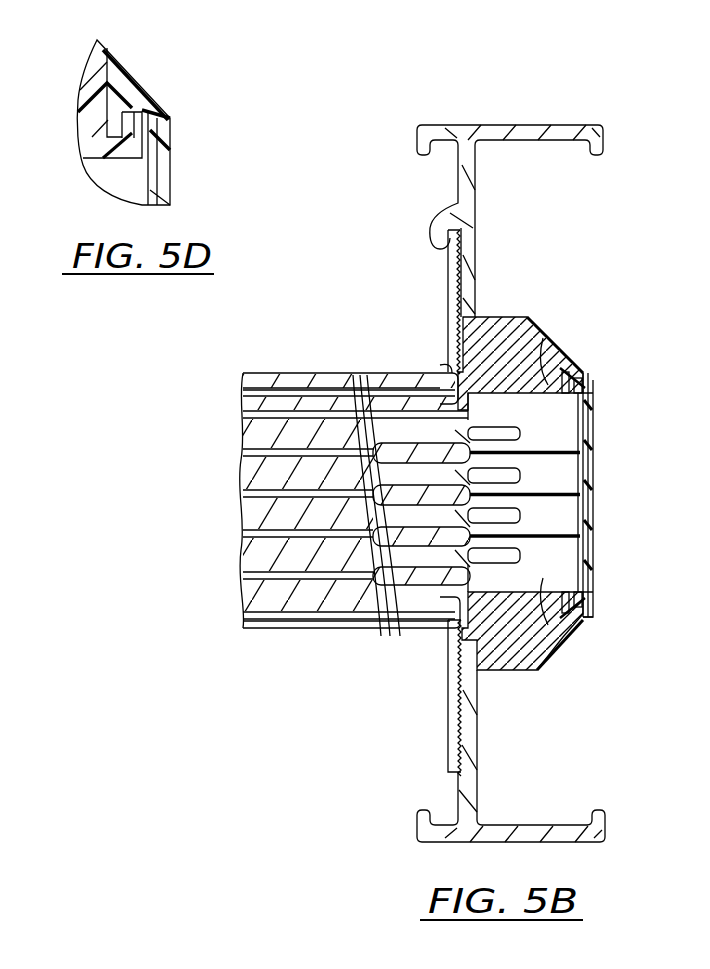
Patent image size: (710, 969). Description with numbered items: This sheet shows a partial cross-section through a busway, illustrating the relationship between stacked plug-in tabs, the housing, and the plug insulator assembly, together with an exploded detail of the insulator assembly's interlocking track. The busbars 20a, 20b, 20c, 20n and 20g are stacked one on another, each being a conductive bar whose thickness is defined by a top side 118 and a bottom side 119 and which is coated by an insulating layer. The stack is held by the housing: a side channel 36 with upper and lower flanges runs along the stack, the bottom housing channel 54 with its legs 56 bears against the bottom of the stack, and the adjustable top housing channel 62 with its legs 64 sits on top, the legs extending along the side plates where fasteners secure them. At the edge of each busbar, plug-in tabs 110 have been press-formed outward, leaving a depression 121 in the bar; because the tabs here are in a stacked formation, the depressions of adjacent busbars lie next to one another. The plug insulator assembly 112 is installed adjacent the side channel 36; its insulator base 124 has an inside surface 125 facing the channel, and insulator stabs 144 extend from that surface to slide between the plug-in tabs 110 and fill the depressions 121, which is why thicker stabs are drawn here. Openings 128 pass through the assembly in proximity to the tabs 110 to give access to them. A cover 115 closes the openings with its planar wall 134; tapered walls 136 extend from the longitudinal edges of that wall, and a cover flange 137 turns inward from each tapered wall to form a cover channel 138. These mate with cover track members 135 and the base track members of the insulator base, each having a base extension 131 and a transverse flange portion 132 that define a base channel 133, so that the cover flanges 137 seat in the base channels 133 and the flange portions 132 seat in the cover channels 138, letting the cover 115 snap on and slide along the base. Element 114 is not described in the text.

In FIG. 5B, the side channel 36 is at (553, 125).
In FIG. 5B, the bottom housing channel 54 is at (250, 628).
In FIG. 5B, the legs 56 is at (447, 754).
In FIG. 5B, the adjustable top housing channel 62 is at (292, 373).
In FIG. 5B, the legs 64 is at (447, 265).
In FIG. 5B, the plug-in tabs 110 is at (520, 433).
In FIG. 5B, the plug insulator assembly 112 is at (530, 318).
In FIG. 5B, the strain relief 114 is at (448, 373).
In FIG. 5B, the cover 115 is at (598, 430).
In FIG. 5B, the top side 118 is at (248, 392).
In FIG. 5B, the bottom side 119 is at (247, 420).
In FIG. 5B, the depression 121 is at (285, 630).
In FIG. 5B, the insulator base 124 is at (488, 317).
In FIG. 5B, the inside surface 125 is at (452, 655).
In FIG. 5B, the openings 128 is at (575, 472).
In FIG. 5D, the base extension 131 is at (165, 110).
In FIG. 5B, the base extension 131 is at (598, 392).
In FIG. 5D, the flange portion 132 is at (150, 92).
In FIG. 5B, the flange portion 132 is at (576, 362).
In FIG. 5D, the base channel 133 is at (103, 136).
In FIG. 5D, the planar wall 134 is at (170, 165).
In FIG. 5B, the planar wall 134 is at (594, 492).
In FIG. 5D, the cover track members 135 is at (122, 68).
In FIG. 5B, the cover track members 135 is at (570, 350).
In FIG. 5D, the tapered walls 136 is at (180, 112).
In FIG. 5B, the tapered walls 136 is at (602, 612).
In FIG. 5D, the cover flange 137 is at (122, 118).
In FIG. 5B, the cover flange 137 is at (548, 348).
In FIG. 5D, the cover channel 138 is at (148, 128).
In FIG. 5B, the cover channel 138 is at (598, 385).
In FIG. 5B, the insulator stabs 144 is at (355, 375).
In FIG. 5B, the busbar 20g is at (250, 397).
In FIG. 5B, the busbar 20a is at (248, 448).
In FIG. 5B, the busbar 20b is at (248, 484).
In FIG. 5B, the busbar 20c is at (250, 513).
In FIG. 5B, the busbar 20n is at (253, 590).